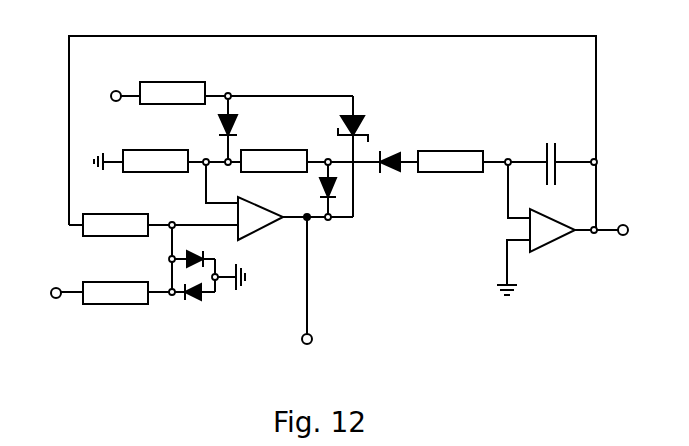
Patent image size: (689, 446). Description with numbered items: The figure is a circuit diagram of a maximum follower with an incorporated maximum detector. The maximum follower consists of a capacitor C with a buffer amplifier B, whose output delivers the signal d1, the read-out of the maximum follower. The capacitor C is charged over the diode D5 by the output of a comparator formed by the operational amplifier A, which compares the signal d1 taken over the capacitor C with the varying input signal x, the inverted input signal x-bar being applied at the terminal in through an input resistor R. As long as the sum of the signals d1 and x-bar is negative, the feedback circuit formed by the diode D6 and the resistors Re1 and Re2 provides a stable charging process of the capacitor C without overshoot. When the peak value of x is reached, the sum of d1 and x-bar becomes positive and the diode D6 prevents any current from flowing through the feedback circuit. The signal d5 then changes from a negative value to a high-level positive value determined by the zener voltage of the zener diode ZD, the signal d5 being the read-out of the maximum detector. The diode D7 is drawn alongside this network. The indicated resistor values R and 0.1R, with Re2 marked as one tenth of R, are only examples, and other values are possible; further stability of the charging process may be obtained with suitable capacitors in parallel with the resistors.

The resistor R is at (144, 179).
The resistor Re2 is at (155, 164).
The resistor Re1 is at (274, 163).
The resistor of value 0.1R is at (450, 147).
The diode D7 is at (248, 129).
The zener diode ZD is at (368, 127).
The diode D5 is at (385, 178).
The diode D6 is at (312, 190).
The capacitor C is at (549, 150).
The operational amplifier A is at (260, 218).
The buffer amplifier B is at (552, 230).
The signal d1 is at (617, 248).
The signal d5 is at (326, 341).
The input terminal in is at (39, 293).
The input signal x (applied inverted as x-bar) x is at (77, 263).